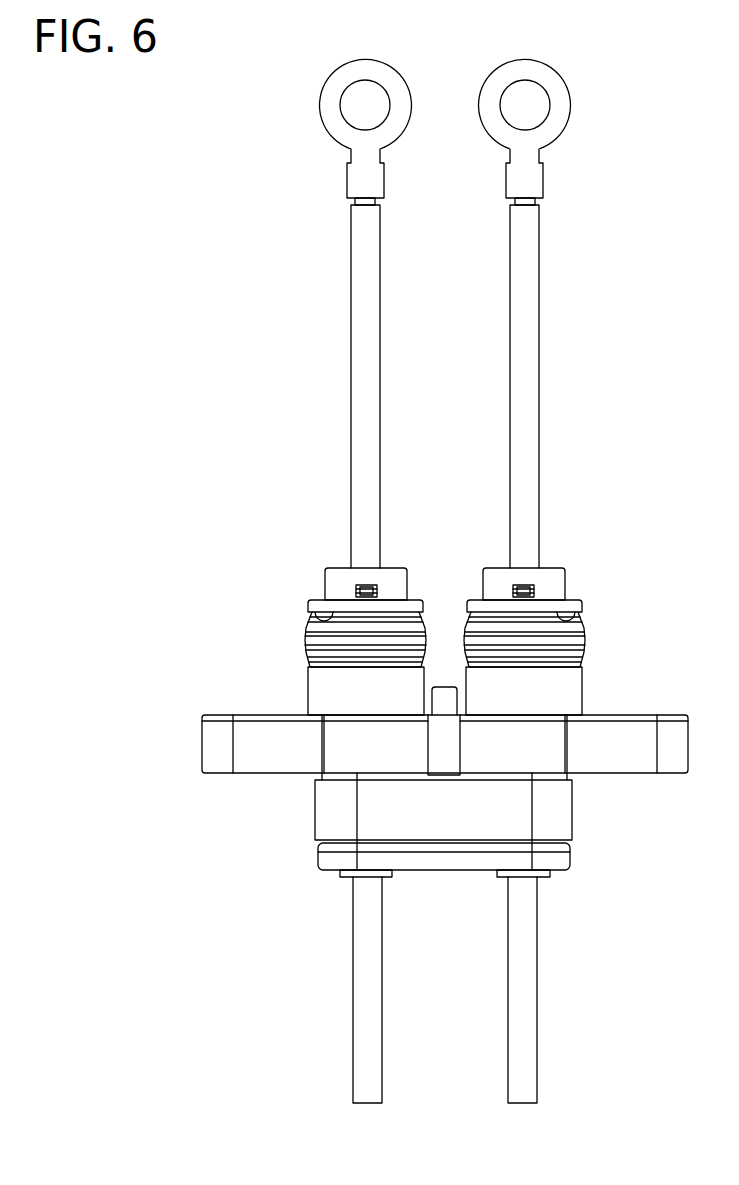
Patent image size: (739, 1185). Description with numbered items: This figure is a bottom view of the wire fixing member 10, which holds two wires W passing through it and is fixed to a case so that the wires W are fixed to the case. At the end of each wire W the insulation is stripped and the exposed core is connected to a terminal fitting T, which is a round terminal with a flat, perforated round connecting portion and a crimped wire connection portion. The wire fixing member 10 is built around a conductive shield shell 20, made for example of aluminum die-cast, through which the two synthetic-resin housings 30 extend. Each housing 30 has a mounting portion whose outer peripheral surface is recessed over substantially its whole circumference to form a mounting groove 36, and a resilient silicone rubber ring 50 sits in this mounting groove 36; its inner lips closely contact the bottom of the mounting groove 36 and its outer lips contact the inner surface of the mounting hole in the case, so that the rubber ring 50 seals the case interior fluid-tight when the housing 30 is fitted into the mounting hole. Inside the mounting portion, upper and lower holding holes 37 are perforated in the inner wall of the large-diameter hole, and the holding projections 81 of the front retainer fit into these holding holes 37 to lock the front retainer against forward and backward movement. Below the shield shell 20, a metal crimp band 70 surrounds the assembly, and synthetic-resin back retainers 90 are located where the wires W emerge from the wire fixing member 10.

The wire fixing member 10 is at (443, 447).
The shield shell 20 is at (239, 699).
The housing 30 is at (321, 555).
The mounting groove 36 is at (316, 620).
The holding hole 37 is at (366, 589).
The rubber ring 50 is at (287, 645).
The crimp band 70 is at (332, 815).
The holding projection 81 is at (367, 589).
The back retainer 90 is at (374, 892).
The terminal fitting T is at (318, 158).
The wire W is at (364, 991).